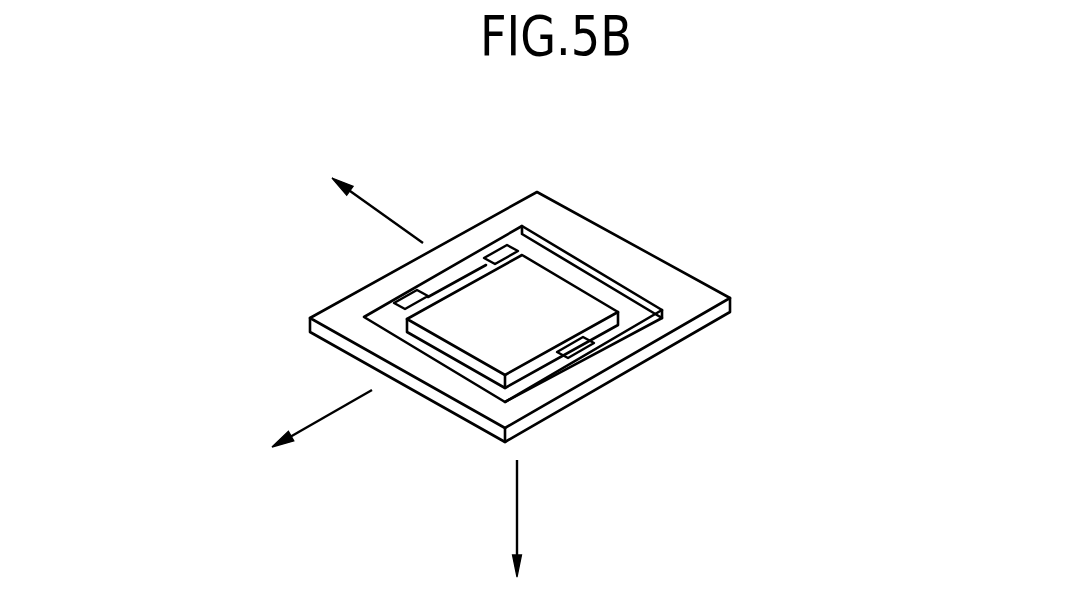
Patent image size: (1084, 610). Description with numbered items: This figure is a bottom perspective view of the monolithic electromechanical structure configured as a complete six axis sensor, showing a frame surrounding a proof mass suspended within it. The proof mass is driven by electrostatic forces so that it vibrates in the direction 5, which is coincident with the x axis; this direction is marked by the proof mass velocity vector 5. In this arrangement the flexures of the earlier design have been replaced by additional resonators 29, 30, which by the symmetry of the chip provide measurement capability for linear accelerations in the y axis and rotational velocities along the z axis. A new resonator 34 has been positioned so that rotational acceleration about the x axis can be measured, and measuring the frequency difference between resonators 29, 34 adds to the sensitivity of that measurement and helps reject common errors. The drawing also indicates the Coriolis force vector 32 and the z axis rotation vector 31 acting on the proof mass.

The Coriolis force vector 32 is at (362, 184).
The resonator 29 is at (522, 232).
The resonator 34 is at (412, 292).
The resonator 30 is at (582, 366).
The Z axis rotation vector 31 is at (302, 439).
The direction 5 is at (673, 535).